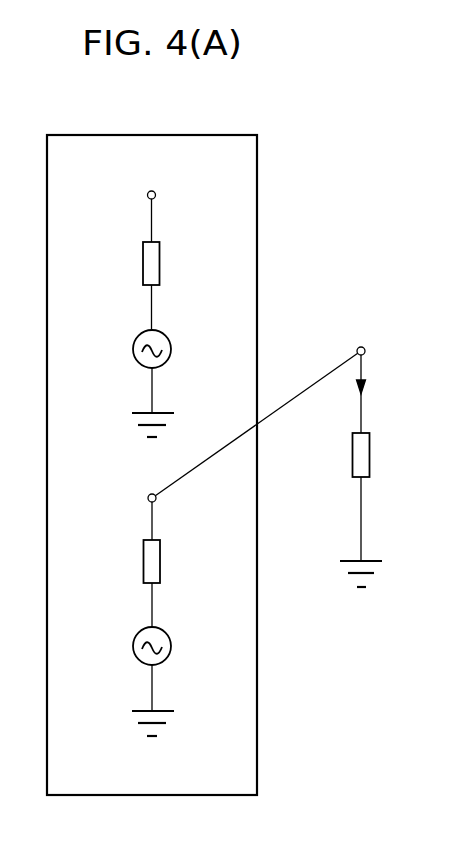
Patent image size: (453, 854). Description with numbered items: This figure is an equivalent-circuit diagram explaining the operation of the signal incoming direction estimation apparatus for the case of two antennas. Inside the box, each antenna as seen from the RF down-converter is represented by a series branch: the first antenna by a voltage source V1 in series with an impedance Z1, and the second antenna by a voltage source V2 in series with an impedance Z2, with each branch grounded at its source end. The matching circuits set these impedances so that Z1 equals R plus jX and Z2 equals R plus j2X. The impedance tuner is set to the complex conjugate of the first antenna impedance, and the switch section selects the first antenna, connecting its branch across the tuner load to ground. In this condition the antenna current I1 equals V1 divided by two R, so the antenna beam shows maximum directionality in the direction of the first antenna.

The impedance of second antenna Z2 is at (132, 260).
The voltage source of second antenna V2 is at (140, 383).
The impedance of first antenna Z1 is at (134, 560).
The voltage source of first antenna V1 is at (141, 681).
The antenna current I1 is at (379, 390).